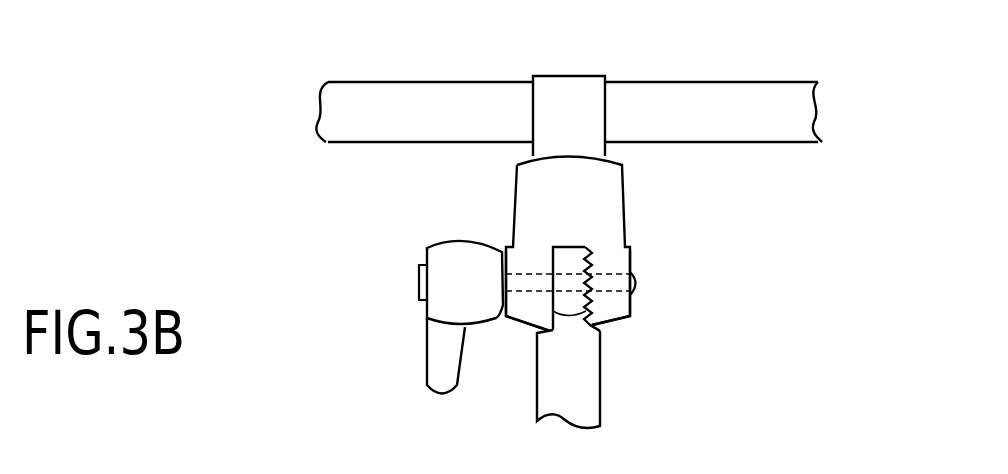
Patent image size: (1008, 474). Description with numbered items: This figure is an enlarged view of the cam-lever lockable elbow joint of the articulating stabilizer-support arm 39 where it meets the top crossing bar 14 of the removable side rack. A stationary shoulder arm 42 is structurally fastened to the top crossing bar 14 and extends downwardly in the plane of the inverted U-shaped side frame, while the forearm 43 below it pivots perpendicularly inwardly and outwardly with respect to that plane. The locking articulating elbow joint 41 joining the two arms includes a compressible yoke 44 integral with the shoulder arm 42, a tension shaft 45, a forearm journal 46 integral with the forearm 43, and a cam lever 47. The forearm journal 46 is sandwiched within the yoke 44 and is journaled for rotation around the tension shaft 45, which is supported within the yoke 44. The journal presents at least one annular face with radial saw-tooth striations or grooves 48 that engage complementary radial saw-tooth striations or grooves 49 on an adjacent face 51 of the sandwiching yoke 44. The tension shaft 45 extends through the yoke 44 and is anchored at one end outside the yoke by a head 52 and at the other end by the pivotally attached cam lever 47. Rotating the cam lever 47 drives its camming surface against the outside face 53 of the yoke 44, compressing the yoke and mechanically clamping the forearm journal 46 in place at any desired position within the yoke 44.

The top crossing bar 14 is at (757, 143).
The stationary shoulder arm 42 is at (567, 88).
The compressible yoke 44 is at (533, 182).
The outside face of the yoke 53 is at (513, 222).
The forearm journal 46 is at (572, 262).
The tension shaft 45 is at (605, 273).
The forearm 43 is at (551, 403).
The head 52 is at (636, 281).
The cam-lever lockable articulating stabilizer-support arm 39 is at (654, 291).
The locking articulating elbow joint 41 is at (632, 310).
The adjacent face of the yoke 51 is at (618, 320).
The complementary radial saw-tooth striations or grooves 49 is at (598, 315).
The radial saw-tooth striations or grooves 48 is at (548, 307).
The cam lever 47 is at (427, 355).